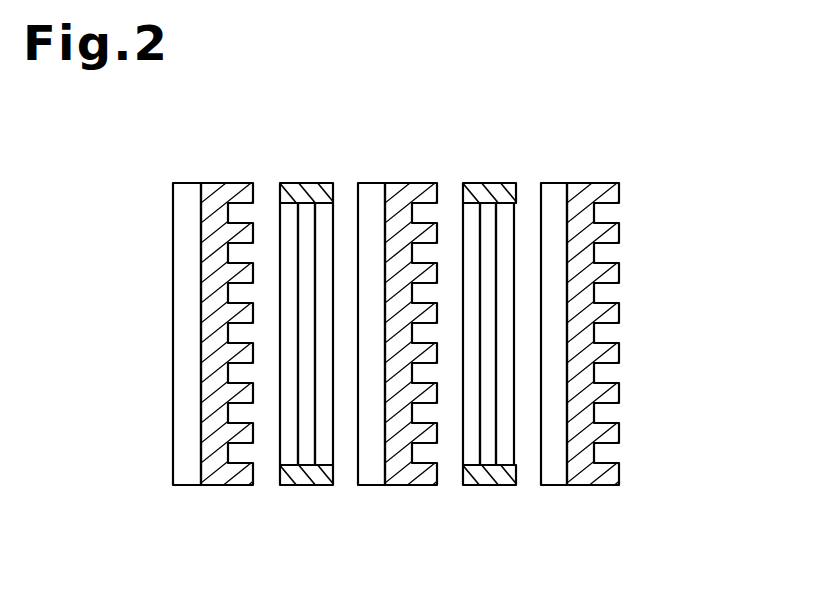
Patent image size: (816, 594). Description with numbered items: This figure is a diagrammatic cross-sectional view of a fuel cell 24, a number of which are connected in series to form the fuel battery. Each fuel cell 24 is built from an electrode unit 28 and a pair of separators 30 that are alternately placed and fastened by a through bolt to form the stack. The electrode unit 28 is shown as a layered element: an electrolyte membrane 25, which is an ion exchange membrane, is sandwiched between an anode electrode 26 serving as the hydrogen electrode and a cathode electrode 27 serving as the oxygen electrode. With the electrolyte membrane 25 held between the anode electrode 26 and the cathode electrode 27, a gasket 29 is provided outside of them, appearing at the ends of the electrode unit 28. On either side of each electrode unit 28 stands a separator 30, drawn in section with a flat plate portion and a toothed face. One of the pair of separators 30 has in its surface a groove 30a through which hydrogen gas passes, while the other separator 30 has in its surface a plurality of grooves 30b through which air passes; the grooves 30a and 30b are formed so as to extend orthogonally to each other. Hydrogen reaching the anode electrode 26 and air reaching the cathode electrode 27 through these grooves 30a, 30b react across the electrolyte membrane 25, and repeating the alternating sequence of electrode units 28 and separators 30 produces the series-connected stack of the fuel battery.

The fuel cell 24 is at (322, 118).
The electrolyte membrane 25 is at (281, 198).
The anode electrode 26 is at (333, 452).
The cathode electrode 27 is at (281, 452).
The electrode unit 28 is at (310, 506).
The gasket 29 is at (310, 182).
The separator 30 is at (222, 183).
The groove 30a is at (376, 184).
The grooves 30b is at (248, 209).